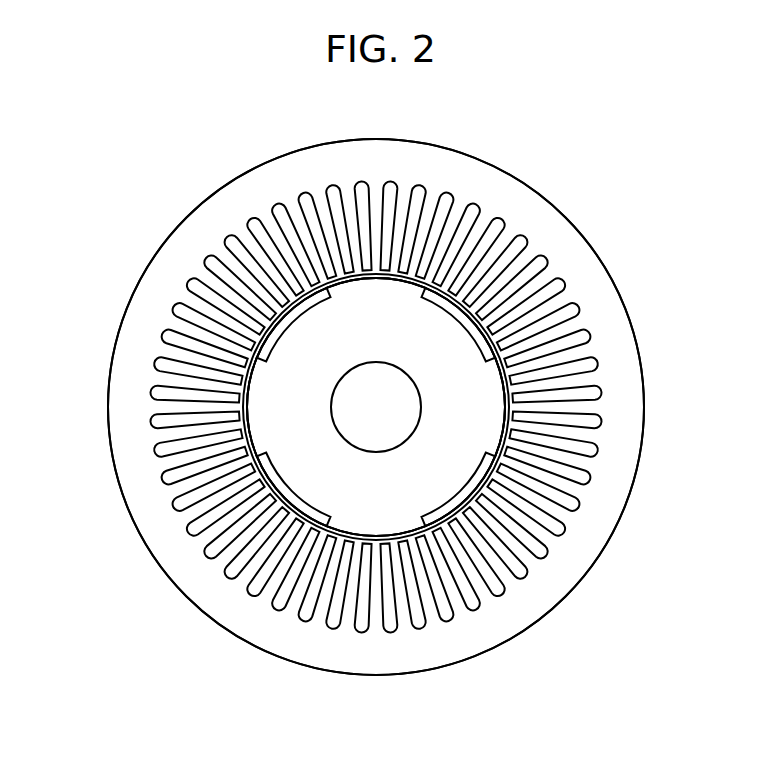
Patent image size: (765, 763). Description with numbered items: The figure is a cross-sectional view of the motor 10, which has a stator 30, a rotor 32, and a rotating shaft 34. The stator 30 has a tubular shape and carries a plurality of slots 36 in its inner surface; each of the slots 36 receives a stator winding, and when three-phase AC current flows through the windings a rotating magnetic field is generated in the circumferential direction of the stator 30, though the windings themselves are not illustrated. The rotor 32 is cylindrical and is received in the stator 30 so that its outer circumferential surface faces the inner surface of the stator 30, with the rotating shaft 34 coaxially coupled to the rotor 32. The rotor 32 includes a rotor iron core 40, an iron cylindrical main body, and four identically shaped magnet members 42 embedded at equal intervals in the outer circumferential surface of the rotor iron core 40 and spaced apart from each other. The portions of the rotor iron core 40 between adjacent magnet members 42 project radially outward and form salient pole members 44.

The motor 10 is at (566, 149).
The stator 30 is at (592, 275).
The rotor 32 is at (476, 389).
The rotating shaft 34 is at (390, 418).
The slots 36 is at (548, 258).
The rotor iron core 40 is at (483, 382).
The magnet members 42 is at (292, 321).
The salient pole members 44 is at (367, 285).